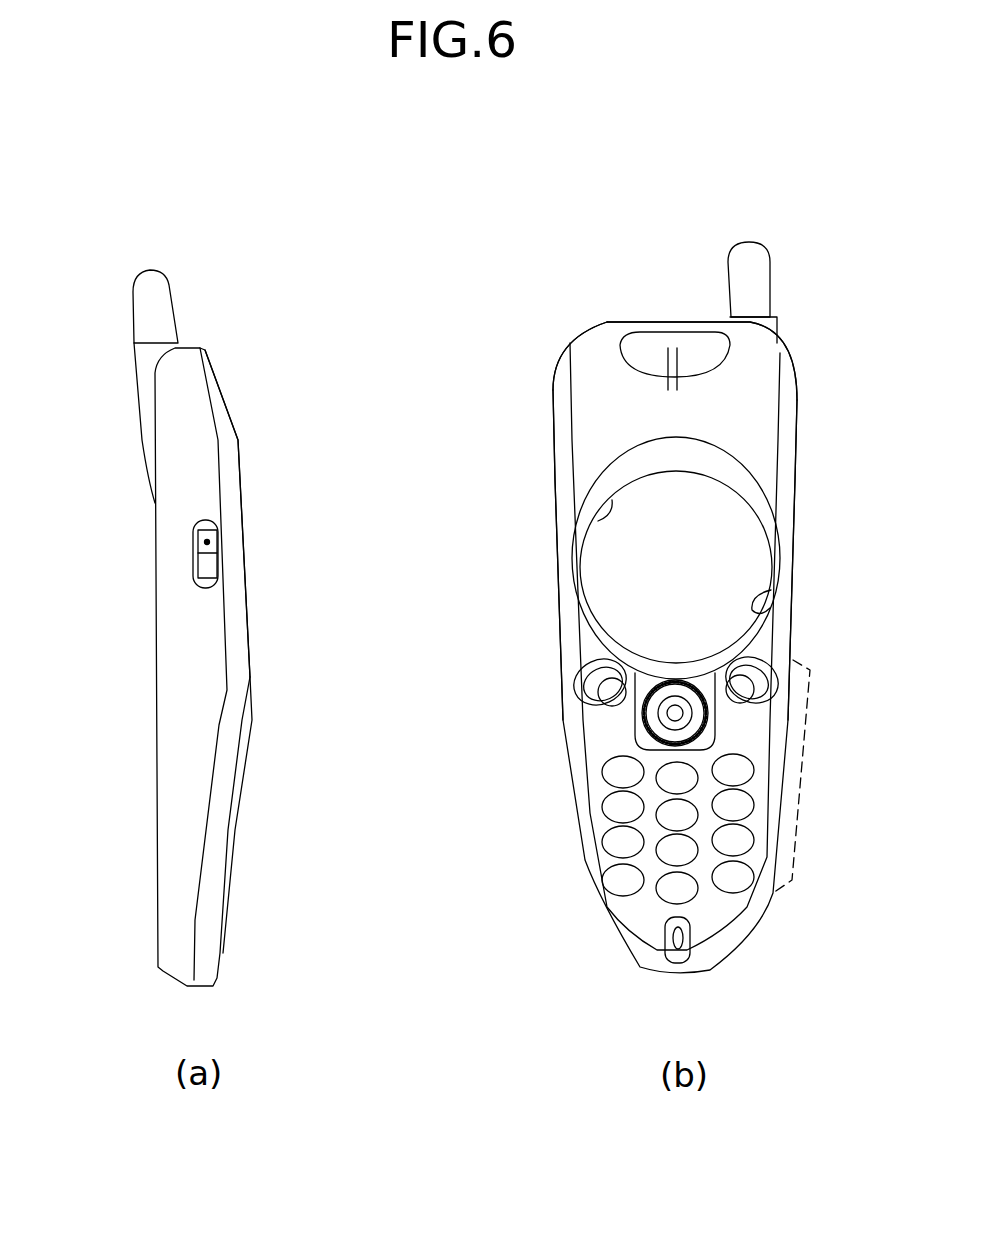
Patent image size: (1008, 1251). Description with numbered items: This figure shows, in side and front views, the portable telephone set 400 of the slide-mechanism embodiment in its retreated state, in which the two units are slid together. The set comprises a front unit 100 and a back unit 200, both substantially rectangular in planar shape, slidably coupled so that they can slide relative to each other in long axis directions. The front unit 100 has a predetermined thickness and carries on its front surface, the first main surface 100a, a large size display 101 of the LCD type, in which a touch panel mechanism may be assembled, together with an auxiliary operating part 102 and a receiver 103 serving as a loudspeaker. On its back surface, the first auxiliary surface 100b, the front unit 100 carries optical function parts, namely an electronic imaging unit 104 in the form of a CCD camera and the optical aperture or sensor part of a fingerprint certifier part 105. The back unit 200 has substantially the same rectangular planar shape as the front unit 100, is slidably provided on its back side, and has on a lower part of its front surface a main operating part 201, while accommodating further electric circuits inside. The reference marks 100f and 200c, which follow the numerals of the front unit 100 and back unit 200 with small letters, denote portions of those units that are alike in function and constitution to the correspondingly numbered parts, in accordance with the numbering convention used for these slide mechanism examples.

The portable telephone set 400 is at (313, 200).
The front unit 100 is at (148, 540).
The first main surface 100a is at (222, 382).
The first auxiliary surface 100b is at (750, 600).
The rear surface 100f is at (257, 695).
The display 101 is at (743, 530).
The auxiliary operating part 102 is at (795, 752).
The receiver 103 is at (688, 963).
The electronic imaging unit 104 is at (192, 552).
The fingerprint certifier part 105 is at (150, 270).
The back unit 200 is at (587, 337).
The display window 200c is at (610, 523).
The main operating part 201 is at (660, 355).